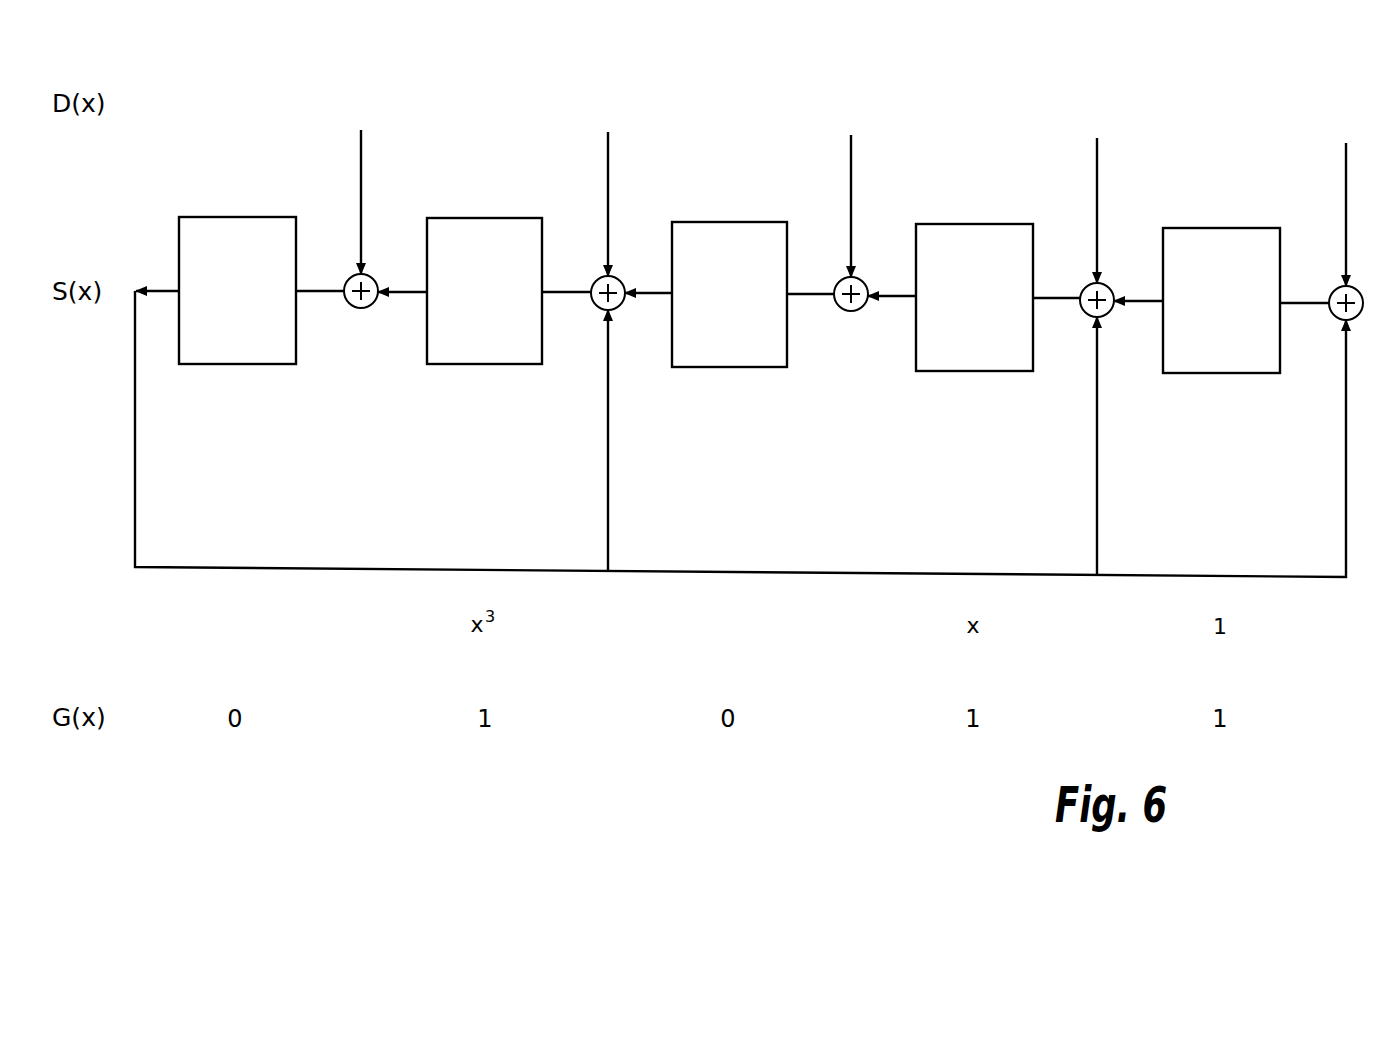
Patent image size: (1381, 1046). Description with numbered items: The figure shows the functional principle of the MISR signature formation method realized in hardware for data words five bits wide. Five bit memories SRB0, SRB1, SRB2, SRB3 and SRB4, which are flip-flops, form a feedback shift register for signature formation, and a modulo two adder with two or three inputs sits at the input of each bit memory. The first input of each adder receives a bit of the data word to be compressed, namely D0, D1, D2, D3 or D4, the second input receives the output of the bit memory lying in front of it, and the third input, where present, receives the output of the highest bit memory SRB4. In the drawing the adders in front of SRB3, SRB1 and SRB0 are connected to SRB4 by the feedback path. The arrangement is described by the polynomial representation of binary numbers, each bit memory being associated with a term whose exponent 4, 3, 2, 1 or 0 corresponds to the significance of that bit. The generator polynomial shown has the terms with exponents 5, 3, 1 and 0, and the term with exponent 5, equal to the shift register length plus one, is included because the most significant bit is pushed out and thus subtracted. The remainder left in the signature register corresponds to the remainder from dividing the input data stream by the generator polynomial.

The highest bit memory SRB4 is at (237, 290).
The bit memory SRB3 is at (484, 291).
The bit memory SRB2 is at (729, 294).
The bit memory SRB1 is at (974, 297).
The bit memory SRB0 is at (1221, 300).
The data word bit D4 is at (360, 182).
The data word bit D3 is at (607, 184).
The data word bit D2 is at (850, 186).
The data word bit D1 is at (1096, 190).
The data word bit D0 is at (1345, 194).
The polynomial exponent 4 is at (237, 310).
The polynomial exponent 3 is at (484, 310).
The polynomial exponent 2 is at (729, 311).
The polynomial exponent 1 is at (974, 315).
The polynomial exponent 0 is at (1221, 318).
The polynomial exponent 5 is at (733, 463).